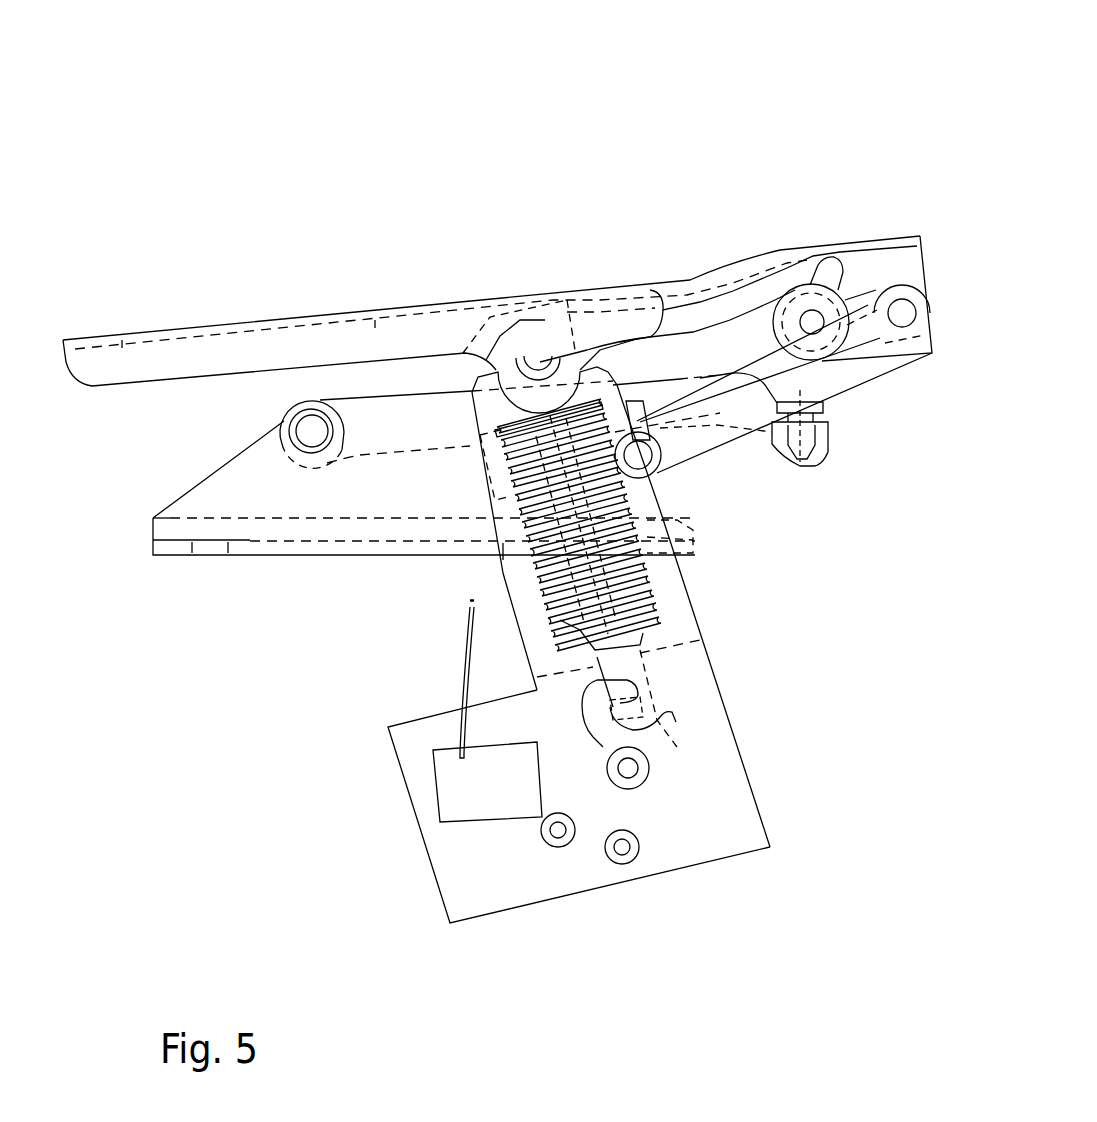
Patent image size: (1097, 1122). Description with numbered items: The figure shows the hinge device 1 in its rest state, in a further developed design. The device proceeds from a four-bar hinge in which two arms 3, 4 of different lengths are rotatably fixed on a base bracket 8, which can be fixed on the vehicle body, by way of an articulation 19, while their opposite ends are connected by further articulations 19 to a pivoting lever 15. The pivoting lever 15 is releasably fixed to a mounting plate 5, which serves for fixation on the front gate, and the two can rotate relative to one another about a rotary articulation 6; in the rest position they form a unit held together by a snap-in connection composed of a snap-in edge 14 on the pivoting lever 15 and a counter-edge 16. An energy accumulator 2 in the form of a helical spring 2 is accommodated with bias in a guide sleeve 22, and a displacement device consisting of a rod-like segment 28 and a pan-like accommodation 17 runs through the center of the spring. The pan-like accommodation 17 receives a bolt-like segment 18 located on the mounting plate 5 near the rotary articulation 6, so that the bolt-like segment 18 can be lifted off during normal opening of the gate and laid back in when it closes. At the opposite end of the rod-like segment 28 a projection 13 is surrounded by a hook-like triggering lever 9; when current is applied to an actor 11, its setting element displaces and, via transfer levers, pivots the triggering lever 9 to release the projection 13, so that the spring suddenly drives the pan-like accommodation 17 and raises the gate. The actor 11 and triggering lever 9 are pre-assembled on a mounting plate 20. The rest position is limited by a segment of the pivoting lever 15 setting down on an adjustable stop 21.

The hinge device 1 is at (272, 262).
The energy accumulator 2 is at (663, 598).
The arm 3 is at (718, 418).
The arm 4 is at (420, 423).
The mounting plate 5 is at (380, 343).
The rotary articulation 6 is at (538, 372).
The base bracket 8 is at (322, 487).
The triggering lever 9 is at (660, 745).
The actor 11 is at (457, 787).
The projection 13 is at (632, 713).
The snap-in edge 14 is at (828, 284).
The pivoting lever 15 is at (743, 335).
The counter-edge 16 is at (799, 276).
The pan-like accommodation 17 is at (490, 400).
The bolt-like segment 18 is at (522, 347).
The articulation 19 is at (312, 430).
The mounting plate 20 is at (562, 873).
The stop 21 is at (840, 412).
The guide sleeve 22 is at (677, 587).
The rod-like segment 28 is at (653, 667).